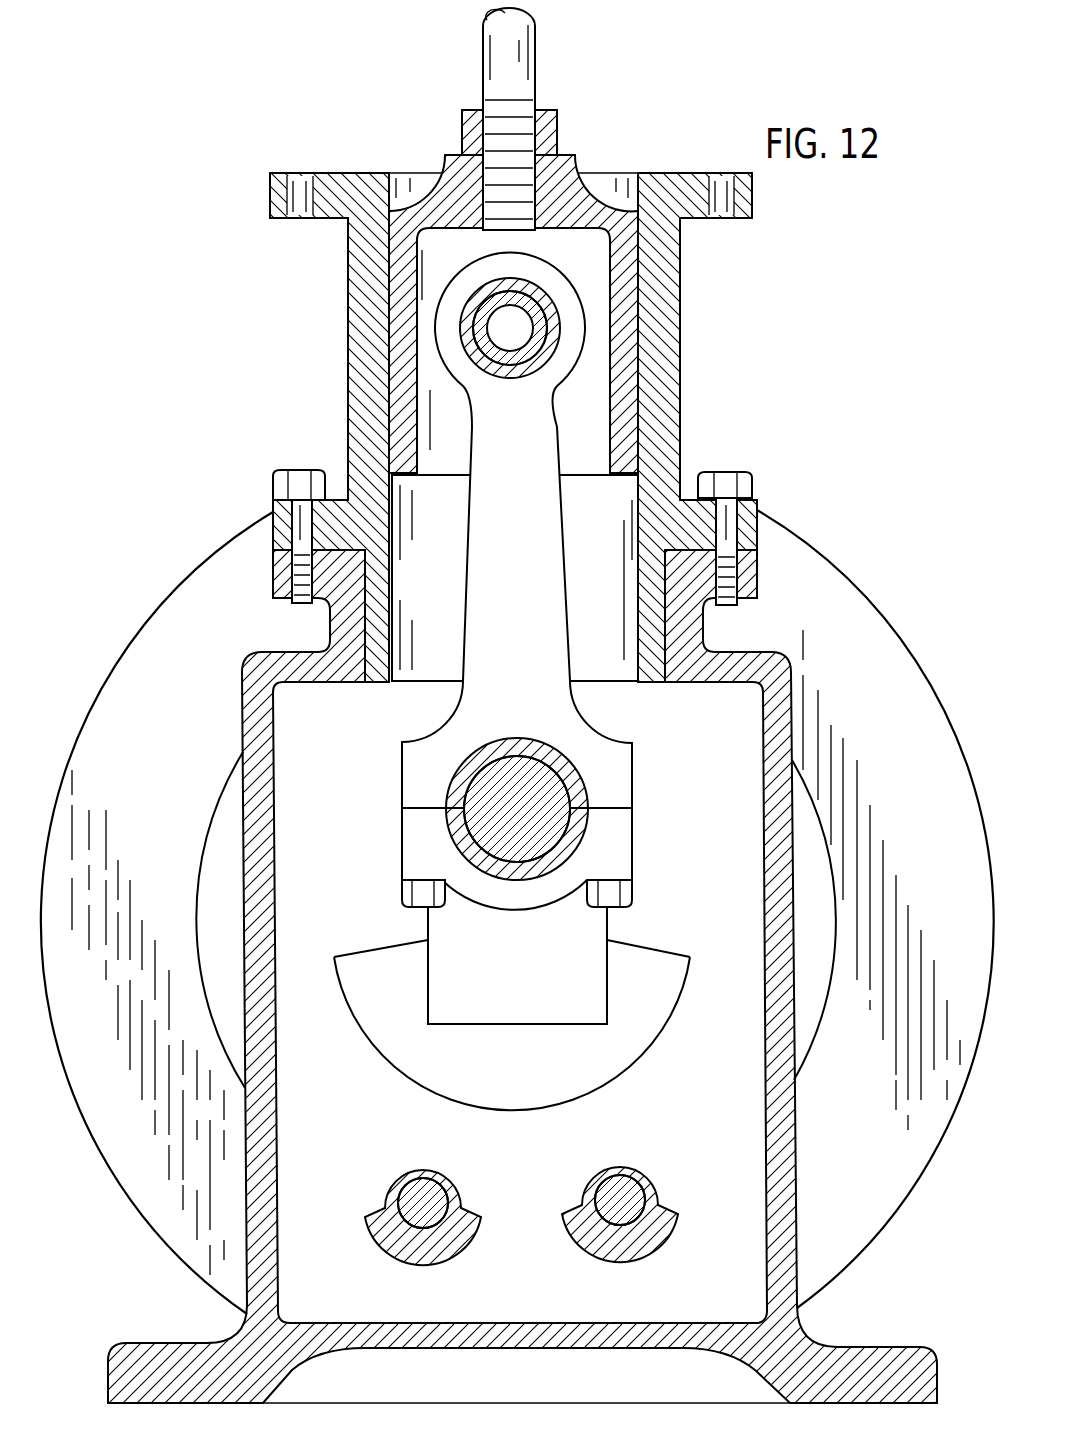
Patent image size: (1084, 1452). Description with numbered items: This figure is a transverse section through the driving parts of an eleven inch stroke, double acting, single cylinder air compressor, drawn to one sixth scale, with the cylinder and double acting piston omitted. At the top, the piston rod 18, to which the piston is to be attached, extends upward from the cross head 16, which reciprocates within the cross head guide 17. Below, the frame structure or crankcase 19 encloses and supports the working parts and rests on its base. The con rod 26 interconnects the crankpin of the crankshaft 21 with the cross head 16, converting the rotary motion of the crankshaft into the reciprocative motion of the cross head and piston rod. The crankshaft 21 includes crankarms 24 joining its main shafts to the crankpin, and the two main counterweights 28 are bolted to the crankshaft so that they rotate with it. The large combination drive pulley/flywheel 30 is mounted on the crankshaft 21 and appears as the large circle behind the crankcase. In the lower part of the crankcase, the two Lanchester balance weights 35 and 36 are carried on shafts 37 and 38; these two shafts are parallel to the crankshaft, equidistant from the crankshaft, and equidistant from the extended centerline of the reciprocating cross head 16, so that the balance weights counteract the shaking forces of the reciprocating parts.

The cross head 16 is at (407, 477).
The cross head guide 17 is at (393, 575).
The piston rod 18 is at (527, 48).
The frame structure or crankcase 19 is at (889, 1366).
The crankshaft 21 is at (637, 926).
The crankarms 24 is at (445, 928).
The con rod 26 is at (553, 580).
The main counterweights 28 is at (410, 1053).
The combination drive pulley/flywheel 30 is at (866, 618).
The Lanchester balance weight 35 is at (623, 1250).
The Lanchester balance weight 36 is at (423, 1250).
The shaft 37 is at (625, 1195).
The shaft 38 is at (418, 1195).